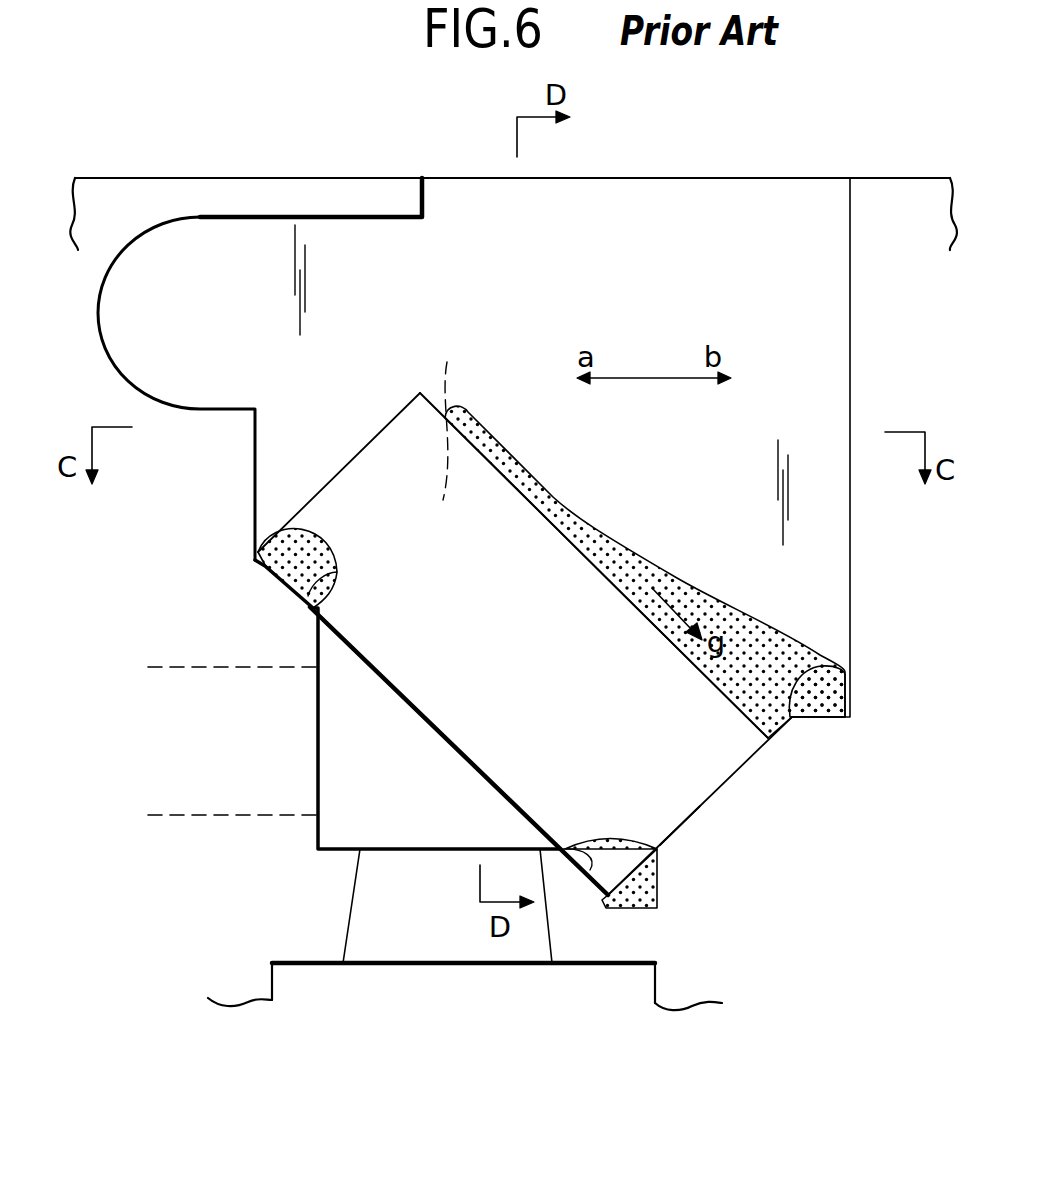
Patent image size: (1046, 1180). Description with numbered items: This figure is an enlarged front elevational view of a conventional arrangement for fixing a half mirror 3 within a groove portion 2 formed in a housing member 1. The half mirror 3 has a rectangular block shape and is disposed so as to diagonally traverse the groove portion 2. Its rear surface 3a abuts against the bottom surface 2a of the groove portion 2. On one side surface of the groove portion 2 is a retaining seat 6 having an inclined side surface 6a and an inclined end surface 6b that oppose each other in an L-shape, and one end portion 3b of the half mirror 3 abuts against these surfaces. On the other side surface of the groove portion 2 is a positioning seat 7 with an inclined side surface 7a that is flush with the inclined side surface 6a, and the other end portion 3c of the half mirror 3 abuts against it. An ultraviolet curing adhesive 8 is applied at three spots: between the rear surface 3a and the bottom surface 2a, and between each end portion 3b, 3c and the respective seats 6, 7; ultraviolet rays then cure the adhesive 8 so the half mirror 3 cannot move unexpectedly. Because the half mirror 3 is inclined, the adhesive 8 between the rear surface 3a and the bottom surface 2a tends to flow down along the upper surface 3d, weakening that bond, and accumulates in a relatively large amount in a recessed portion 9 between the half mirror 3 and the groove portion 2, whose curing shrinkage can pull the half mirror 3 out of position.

The first casing member 1 is at (283, 197).
The groove portion 2 is at (676, 200).
The bottom surface of the groove portion 2a is at (790, 302).
The half mirror 3 is at (501, 658).
The rear surface of the half mirror 3a is at (452, 412).
The one end portion of the half mirror 3b is at (698, 760).
The other end portion of the half mirror 3c is at (365, 490).
The upper surface of the half mirror 3d is at (555, 510).
The retaining seat 6 is at (596, 918).
The inclined side surface of the retaining seat 6a is at (588, 866).
The inclined end surface of the retaining seat 6b is at (672, 812).
The positioning seat 7 is at (278, 595).
The inclined side surface of the positioning seat 7a is at (333, 575).
The ultraviolet curing adhesive 8 is at (322, 544).
The recessed portion 9 is at (845, 678).